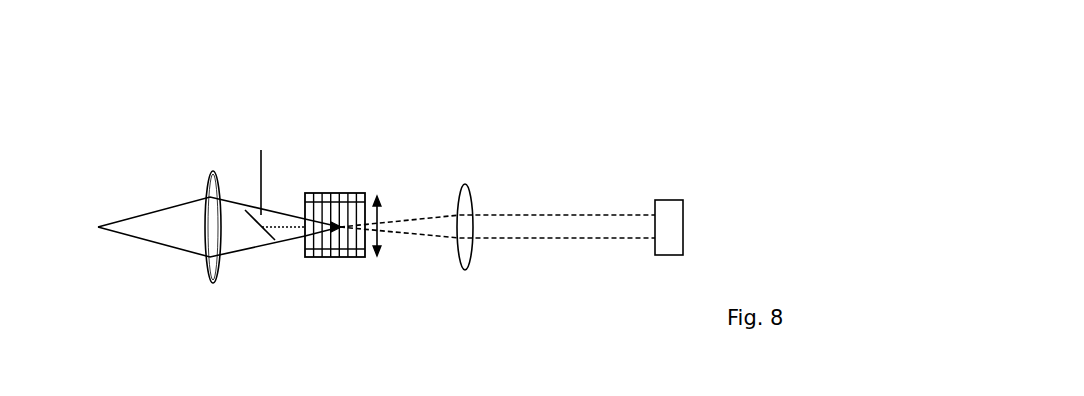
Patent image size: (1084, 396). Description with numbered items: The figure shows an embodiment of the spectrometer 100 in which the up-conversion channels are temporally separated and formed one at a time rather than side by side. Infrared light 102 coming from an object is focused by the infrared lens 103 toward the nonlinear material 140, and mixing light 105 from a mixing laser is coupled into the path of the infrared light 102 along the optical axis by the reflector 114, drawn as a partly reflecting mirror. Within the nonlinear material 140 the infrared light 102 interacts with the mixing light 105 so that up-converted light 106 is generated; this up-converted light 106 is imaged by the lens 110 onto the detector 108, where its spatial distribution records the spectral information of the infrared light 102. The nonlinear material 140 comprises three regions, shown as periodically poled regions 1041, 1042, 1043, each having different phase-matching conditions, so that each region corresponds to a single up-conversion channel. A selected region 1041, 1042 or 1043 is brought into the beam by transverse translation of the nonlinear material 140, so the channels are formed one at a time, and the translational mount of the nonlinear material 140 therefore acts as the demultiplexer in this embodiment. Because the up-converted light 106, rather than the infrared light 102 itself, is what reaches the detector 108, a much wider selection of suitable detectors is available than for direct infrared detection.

The spectrometer 100 is at (721, 85).
The infrared light 102 is at (201, 208).
The infrared lens 103 is at (201, 200).
The mixing light 105 is at (284, 182).
The up-converted light 106 is at (497, 258).
The detector 108 is at (681, 202).
The lens 110 is at (481, 201).
The reflector 114 is at (275, 253).
The light modulator 140 is at (335, 196).
The periodically poled region 1041 is at (354, 168).
The periodically poled region 1042 is at (331, 292).
The periodically poled region 1043 is at (372, 253).